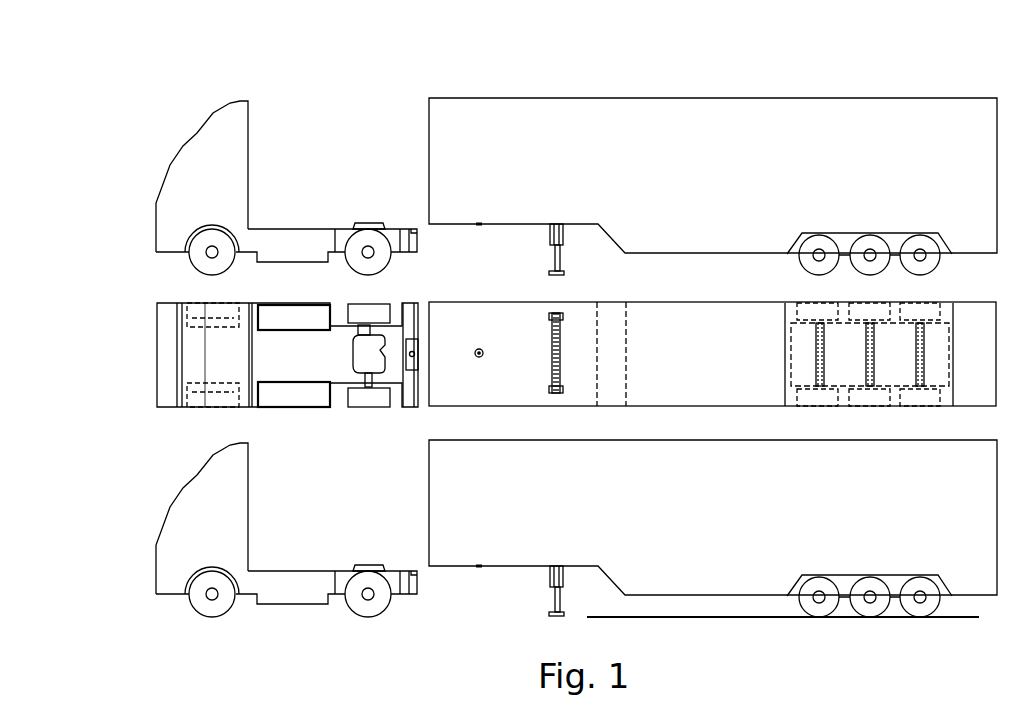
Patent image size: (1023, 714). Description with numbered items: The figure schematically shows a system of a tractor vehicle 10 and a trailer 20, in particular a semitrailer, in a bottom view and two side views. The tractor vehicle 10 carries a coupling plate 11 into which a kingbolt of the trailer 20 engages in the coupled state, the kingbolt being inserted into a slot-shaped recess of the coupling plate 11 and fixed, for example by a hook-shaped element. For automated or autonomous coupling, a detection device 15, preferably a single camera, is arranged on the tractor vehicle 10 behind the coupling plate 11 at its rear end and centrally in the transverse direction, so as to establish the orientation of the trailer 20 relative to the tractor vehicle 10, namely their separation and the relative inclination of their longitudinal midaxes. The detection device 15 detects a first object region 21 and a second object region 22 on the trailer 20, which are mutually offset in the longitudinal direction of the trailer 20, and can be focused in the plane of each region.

The tractor vehicle 10 is at (264, 126).
The coupling plate 11 is at (370, 222).
The detection device 15 is at (412, 350).
The trailer 20 is at (773, 91).
The first object region 21 is at (478, 348).
The second object region 22 is at (548, 262).